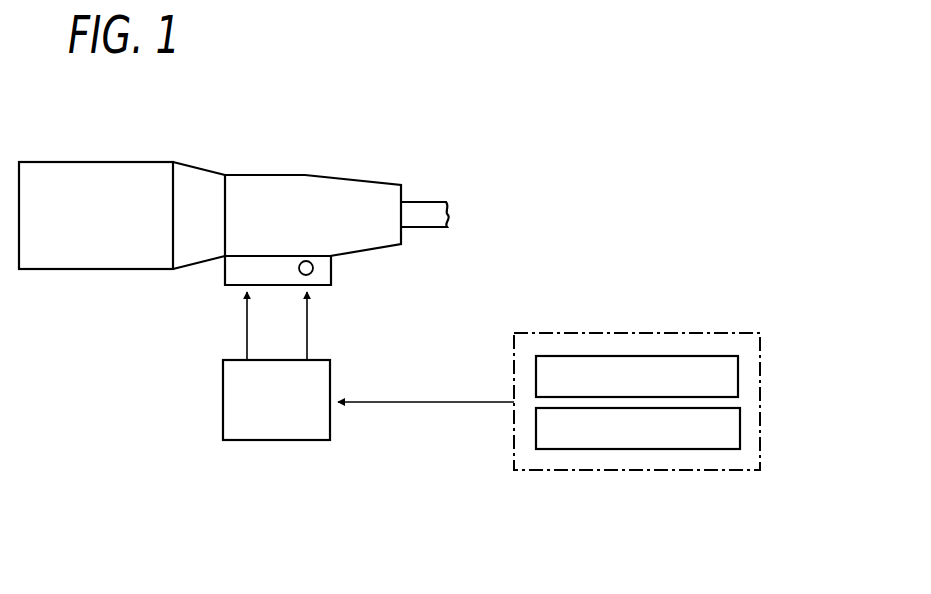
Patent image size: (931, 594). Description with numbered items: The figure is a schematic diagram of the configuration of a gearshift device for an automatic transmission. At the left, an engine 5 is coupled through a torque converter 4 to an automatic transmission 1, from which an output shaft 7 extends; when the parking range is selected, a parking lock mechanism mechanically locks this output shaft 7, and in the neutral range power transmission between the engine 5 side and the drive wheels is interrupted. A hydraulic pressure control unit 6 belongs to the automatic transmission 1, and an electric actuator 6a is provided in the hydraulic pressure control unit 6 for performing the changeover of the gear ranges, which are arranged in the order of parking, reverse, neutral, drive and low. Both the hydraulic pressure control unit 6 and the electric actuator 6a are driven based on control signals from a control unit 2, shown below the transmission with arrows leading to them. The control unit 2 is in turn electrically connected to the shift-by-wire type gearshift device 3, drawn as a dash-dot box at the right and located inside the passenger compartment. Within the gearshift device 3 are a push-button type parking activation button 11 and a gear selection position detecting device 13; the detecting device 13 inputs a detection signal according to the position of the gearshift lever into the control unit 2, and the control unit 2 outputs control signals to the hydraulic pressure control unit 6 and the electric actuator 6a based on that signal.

The automatic transmission 1 is at (293, 174).
The control unit 2 is at (248, 441).
The gearshift device 3 is at (574, 333).
The torque converter 4 is at (198, 167).
The engine 5 is at (61, 162).
The hydraulic pressure control unit 6 is at (233, 268).
The electric actuator 6a is at (313, 268).
The output shaft 7 is at (432, 202).
The P activation button 11 is at (738, 372).
The gear selection position detecting device 13 is at (740, 425).